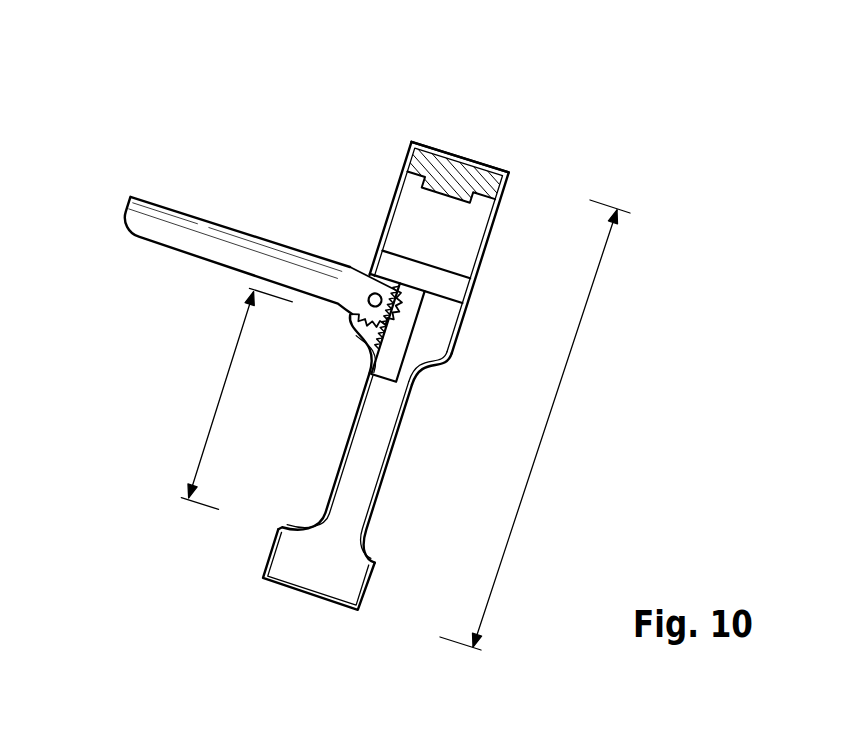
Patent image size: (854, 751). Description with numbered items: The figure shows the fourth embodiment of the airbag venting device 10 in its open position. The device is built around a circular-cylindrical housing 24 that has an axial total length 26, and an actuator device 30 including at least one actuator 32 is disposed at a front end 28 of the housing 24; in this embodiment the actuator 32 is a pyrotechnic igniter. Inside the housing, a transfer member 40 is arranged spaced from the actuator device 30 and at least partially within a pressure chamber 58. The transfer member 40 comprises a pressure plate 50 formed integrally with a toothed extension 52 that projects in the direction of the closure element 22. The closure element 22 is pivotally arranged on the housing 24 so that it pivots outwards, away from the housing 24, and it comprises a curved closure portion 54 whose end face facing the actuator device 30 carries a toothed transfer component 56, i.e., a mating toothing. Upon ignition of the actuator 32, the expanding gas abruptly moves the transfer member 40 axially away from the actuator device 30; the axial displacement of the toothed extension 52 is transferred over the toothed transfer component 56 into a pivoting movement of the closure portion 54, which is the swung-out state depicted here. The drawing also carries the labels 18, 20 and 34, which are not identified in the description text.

The airbag venting device 10 is at (115, 112).
The shaft 18 is at (395, 437).
The shaft edge 20 is at (352, 432).
The closure element 22 is at (234, 212).
The housing 24 is at (348, 579).
The axial total length 26 is at (540, 454).
The front end 28 is at (466, 140).
The actuator device 30 is at (512, 210).
The actuator 32 is at (484, 178).
The lever stroke distance 34 is at (213, 400).
The transfer member 40 is at (442, 300).
The pressure plate 50 is at (452, 277).
The toothed extension 52 is at (402, 330).
The curved closure portion 54 is at (207, 232).
The toothed transfer component 56 is at (378, 293).
The pressure chamber 58 is at (408, 208).